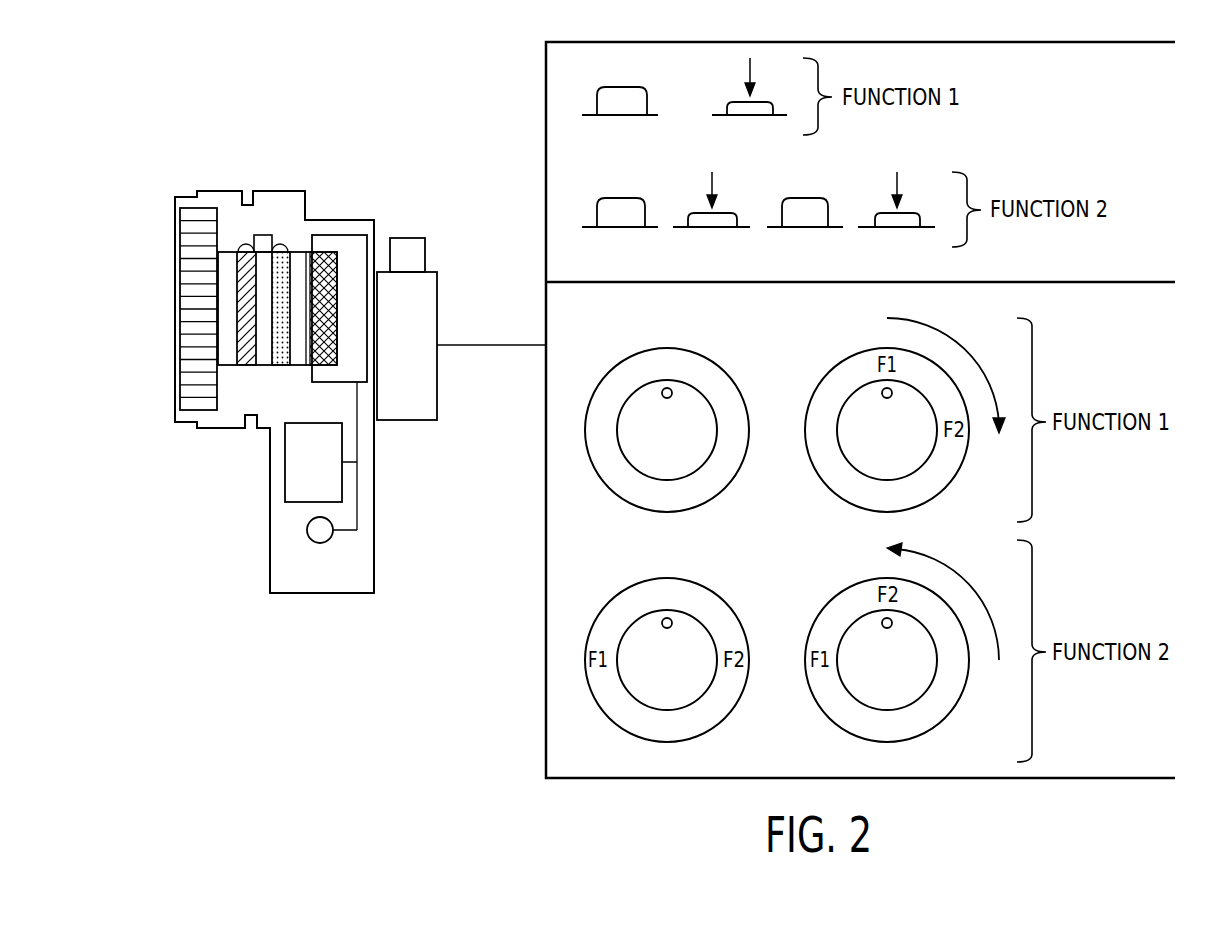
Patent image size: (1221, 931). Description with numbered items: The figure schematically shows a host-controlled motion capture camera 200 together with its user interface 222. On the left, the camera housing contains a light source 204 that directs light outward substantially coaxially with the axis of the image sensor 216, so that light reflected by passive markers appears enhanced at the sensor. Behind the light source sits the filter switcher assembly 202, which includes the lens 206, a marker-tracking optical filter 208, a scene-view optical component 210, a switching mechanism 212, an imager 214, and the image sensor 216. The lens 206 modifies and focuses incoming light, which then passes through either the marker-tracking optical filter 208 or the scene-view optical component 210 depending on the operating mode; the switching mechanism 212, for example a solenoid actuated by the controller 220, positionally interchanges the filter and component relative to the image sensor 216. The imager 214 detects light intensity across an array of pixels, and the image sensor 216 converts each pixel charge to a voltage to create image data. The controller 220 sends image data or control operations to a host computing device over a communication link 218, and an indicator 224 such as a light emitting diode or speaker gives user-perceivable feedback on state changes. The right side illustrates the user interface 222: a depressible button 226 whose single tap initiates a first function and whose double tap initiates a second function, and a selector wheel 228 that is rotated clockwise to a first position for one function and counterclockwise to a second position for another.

The motion capture camera 200 is at (375, 480).
The filter switcher assembly 202 is at (276, 237).
The light source 204 is at (195, 205).
The lens 206 is at (230, 252).
The marker-tracking optical filter 208 is at (238, 252).
The scene-view optical component 210 is at (285, 252).
The switching mechanism 212 is at (262, 235).
The imager 214 is at (320, 252).
The image sensor 216 is at (353, 233).
The communication link 218 is at (308, 526).
The controller 220 is at (285, 448).
The user interface 222 is at (420, 361).
The indicator 224 is at (427, 250).
The depressible button 226 is at (618, 87).
The selector wheel 228 is at (667, 347).